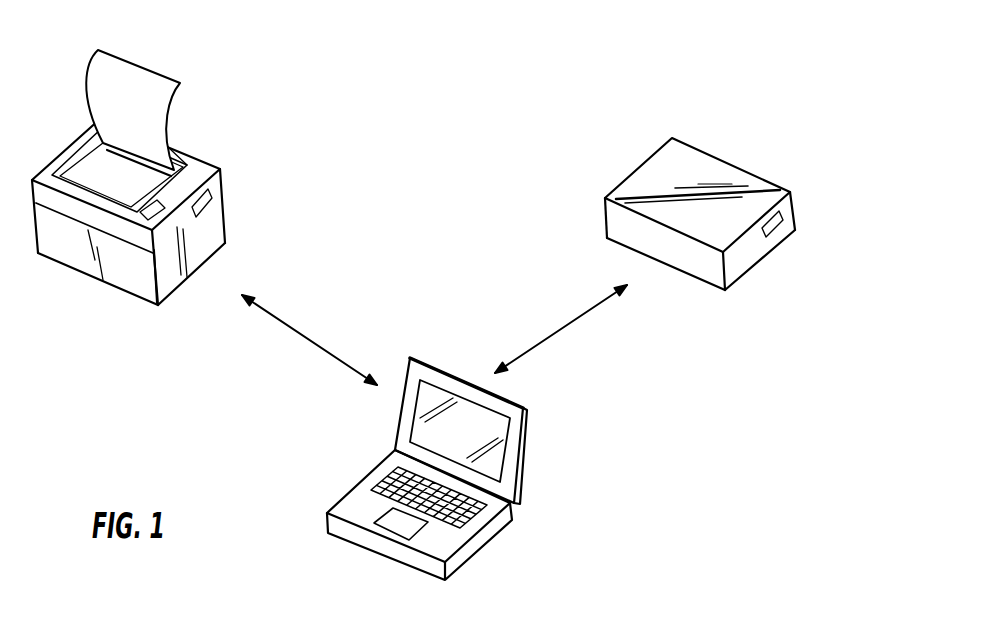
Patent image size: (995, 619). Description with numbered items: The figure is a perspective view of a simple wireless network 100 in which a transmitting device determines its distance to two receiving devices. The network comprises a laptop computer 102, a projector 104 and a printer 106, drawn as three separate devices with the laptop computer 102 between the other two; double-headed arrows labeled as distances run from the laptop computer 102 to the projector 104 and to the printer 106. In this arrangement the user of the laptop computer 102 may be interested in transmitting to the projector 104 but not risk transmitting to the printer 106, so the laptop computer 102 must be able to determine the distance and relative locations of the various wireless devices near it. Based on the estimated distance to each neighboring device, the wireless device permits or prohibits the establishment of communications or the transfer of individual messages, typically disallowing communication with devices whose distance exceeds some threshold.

The wireless network 100 is at (741, 92).
The laptop computer 102 is at (497, 537).
The projector 104 is at (772, 252).
The printer 106 is at (222, 172).